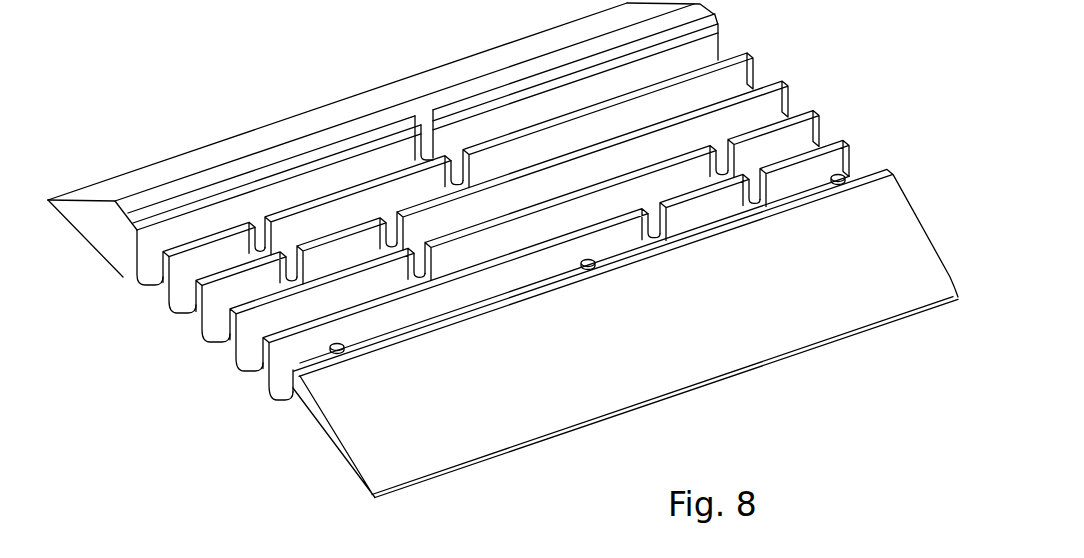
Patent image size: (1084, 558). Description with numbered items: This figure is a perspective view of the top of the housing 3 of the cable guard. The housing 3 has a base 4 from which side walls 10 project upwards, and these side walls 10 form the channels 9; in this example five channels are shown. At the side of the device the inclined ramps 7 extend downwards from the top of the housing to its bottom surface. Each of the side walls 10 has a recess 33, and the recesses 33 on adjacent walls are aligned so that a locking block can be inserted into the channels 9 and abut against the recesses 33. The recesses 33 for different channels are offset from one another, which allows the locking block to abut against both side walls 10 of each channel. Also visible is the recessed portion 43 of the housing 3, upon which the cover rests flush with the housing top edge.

The housing 3 is at (501, 262).
The base 4 is at (195, 327).
The ramps 7 is at (432, 433).
The channels 9 is at (137, 270).
The side walls 10 is at (848, 142).
The recess 33 is at (753, 181).
The recessed portion of the housing 43 is at (97, 234).